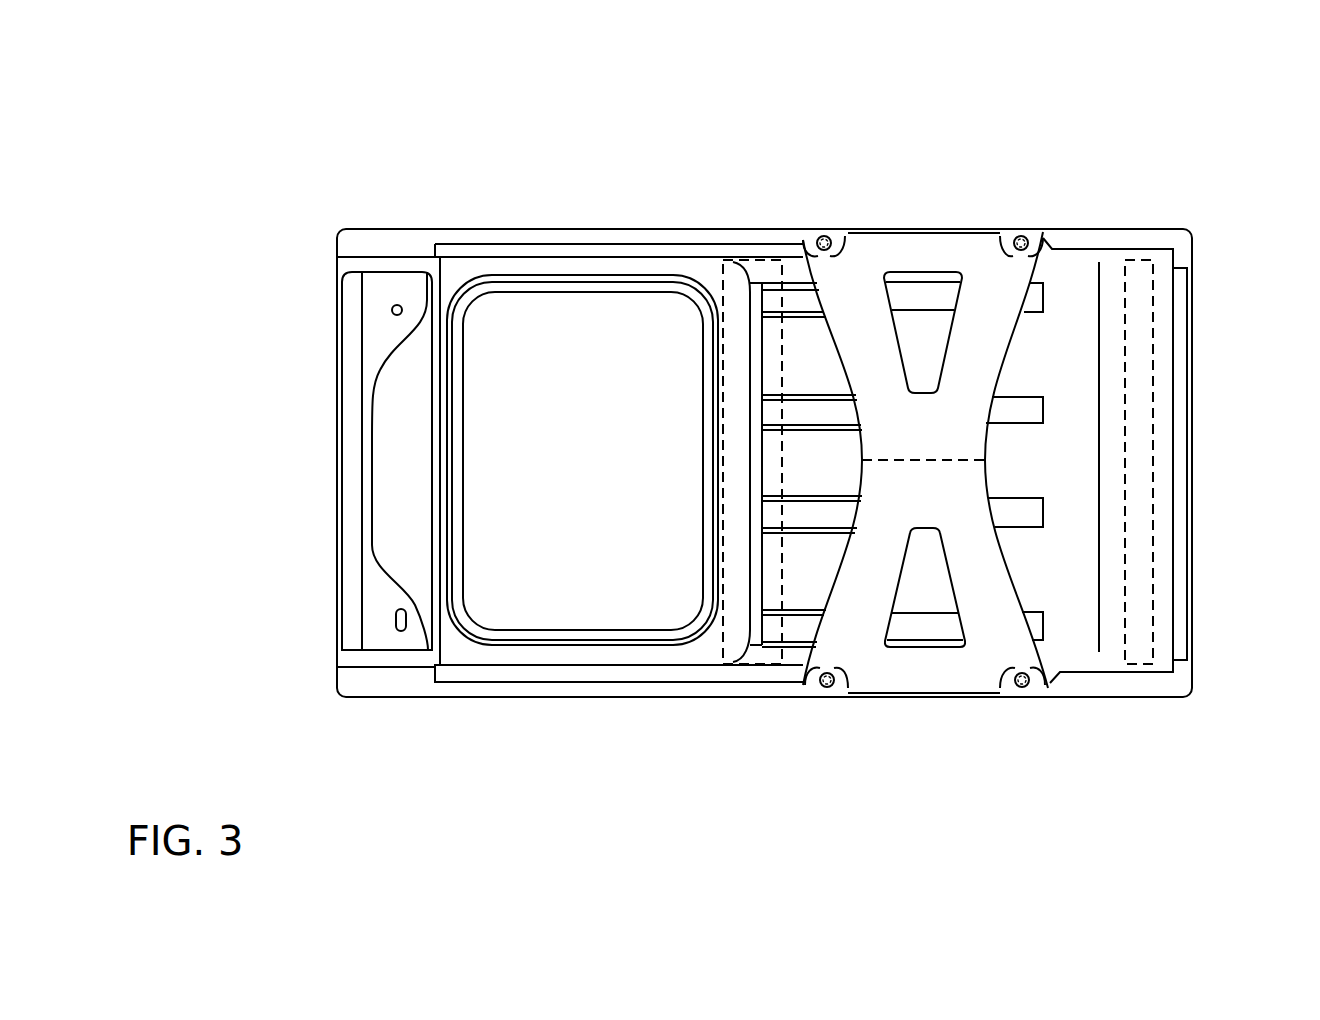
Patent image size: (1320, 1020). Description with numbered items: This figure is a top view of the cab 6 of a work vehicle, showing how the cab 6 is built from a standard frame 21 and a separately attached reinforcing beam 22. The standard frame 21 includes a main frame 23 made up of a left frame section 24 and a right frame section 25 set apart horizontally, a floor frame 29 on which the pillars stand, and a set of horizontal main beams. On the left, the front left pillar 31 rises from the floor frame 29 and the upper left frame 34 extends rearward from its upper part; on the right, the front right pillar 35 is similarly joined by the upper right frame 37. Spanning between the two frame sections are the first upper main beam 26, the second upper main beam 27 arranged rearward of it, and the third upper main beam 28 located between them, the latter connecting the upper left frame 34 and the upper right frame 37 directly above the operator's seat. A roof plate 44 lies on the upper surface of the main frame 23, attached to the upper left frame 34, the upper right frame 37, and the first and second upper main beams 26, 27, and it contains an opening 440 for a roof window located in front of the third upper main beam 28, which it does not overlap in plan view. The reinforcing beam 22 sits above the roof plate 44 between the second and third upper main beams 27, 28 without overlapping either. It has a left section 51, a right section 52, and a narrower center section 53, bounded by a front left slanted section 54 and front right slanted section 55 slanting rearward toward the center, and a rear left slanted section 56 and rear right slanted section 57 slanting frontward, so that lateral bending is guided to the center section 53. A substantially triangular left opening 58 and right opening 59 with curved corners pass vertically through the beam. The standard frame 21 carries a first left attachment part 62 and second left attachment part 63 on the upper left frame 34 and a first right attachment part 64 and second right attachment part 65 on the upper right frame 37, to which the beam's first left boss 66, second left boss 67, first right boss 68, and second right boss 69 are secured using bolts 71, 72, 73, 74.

The cab 6 is at (527, 125).
The standard frame 21 is at (652, 197).
The reinforcing beam 22 is at (917, 245).
The main frame 23 is at (420, 365).
The left frame section 24 is at (482, 712).
The right frame section 25 is at (462, 212).
The first upper main beam 26 is at (440, 462).
The second upper main beam 27 is at (1155, 378).
The third upper main beam 28 is at (722, 380).
The floor frame 29 is at (375, 598).
The front left pillar 31 is at (388, 694).
The upper left frame 34 is at (577, 694).
The front right pillar 35 is at (380, 228).
The upper right frame 37 is at (572, 228).
The roof plate 44 is at (1085, 473).
The left section 51 is at (922, 672).
The right section 52 is at (945, 245).
The center section 53 is at (970, 443).
The front left slanted section 54 is at (855, 580).
The front right slanted section 55 is at (845, 348).
The rear left slanted section 56 is at (1003, 583).
The rear right slanted section 57 is at (1003, 318).
The left opening 58 is at (945, 578).
The right opening 59 is at (945, 330).
The first left attachment part 62 is at (818, 692).
The second left attachment part 63 is at (1015, 692).
The first right attachment part 64 is at (815, 232).
The second right attachment part 65 is at (1015, 232).
The first left boss 66 is at (800, 690).
The second left boss 67 is at (1000, 692).
The first right boss 68 is at (810, 232).
The second right boss 69 is at (1000, 232).
The bolt 71 is at (840, 690).
The bolt 72 is at (1045, 690).
The bolt 73 is at (845, 235).
The bolt 74 is at (1045, 232).
The opening 440 is at (560, 630).